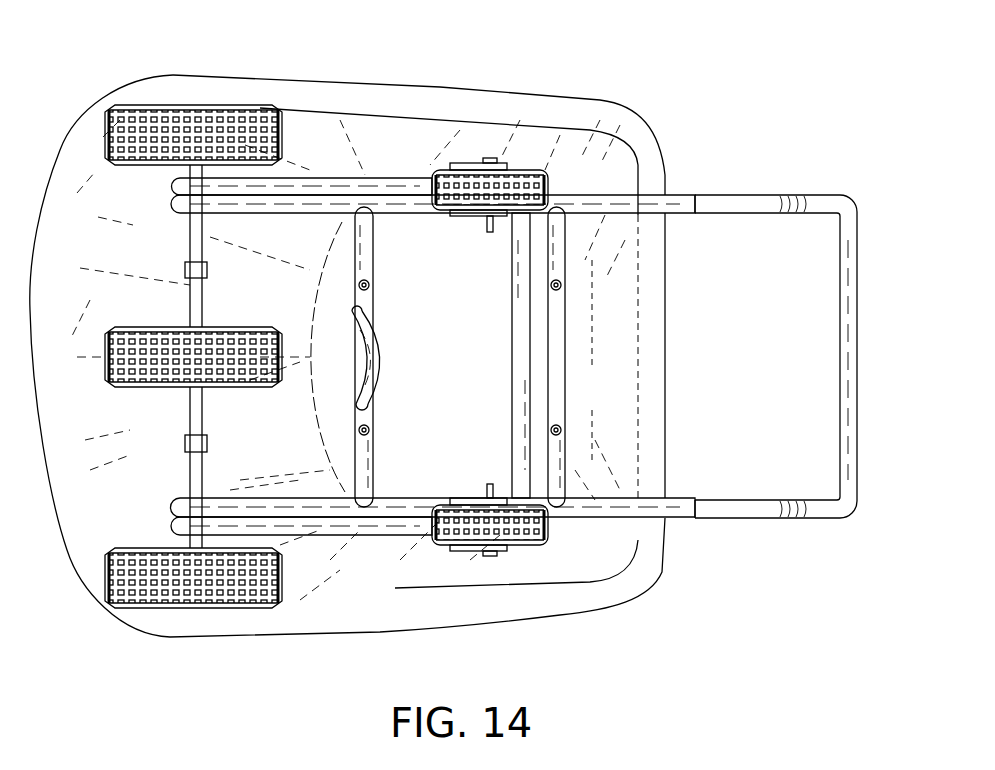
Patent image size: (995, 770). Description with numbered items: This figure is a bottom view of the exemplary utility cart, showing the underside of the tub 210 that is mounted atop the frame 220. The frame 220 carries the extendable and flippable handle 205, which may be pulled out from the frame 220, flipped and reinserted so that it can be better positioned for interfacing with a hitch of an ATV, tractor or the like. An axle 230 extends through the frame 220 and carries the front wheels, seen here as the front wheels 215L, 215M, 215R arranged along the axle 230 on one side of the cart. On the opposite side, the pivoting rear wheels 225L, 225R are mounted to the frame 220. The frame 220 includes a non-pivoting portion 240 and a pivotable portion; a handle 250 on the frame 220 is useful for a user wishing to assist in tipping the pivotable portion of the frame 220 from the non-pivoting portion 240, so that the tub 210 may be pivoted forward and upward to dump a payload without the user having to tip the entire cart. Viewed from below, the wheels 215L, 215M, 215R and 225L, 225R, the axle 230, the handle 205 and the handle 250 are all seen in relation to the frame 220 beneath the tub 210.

The handle 205 is at (797, 518).
The tub 210 is at (347, 356).
The front wheel 215L is at (192, 105).
The front wheel 215M is at (178, 388).
The front wheel 215R is at (125, 608).
The frame 220 is at (670, 195).
The pivoting rear wheel 225L is at (530, 170).
The pivoting rear wheel 225R is at (537, 545).
The axle 230 is at (203, 250).
The non-pivoting portion 240 is at (530, 480).
The handle 250 is at (378, 345).